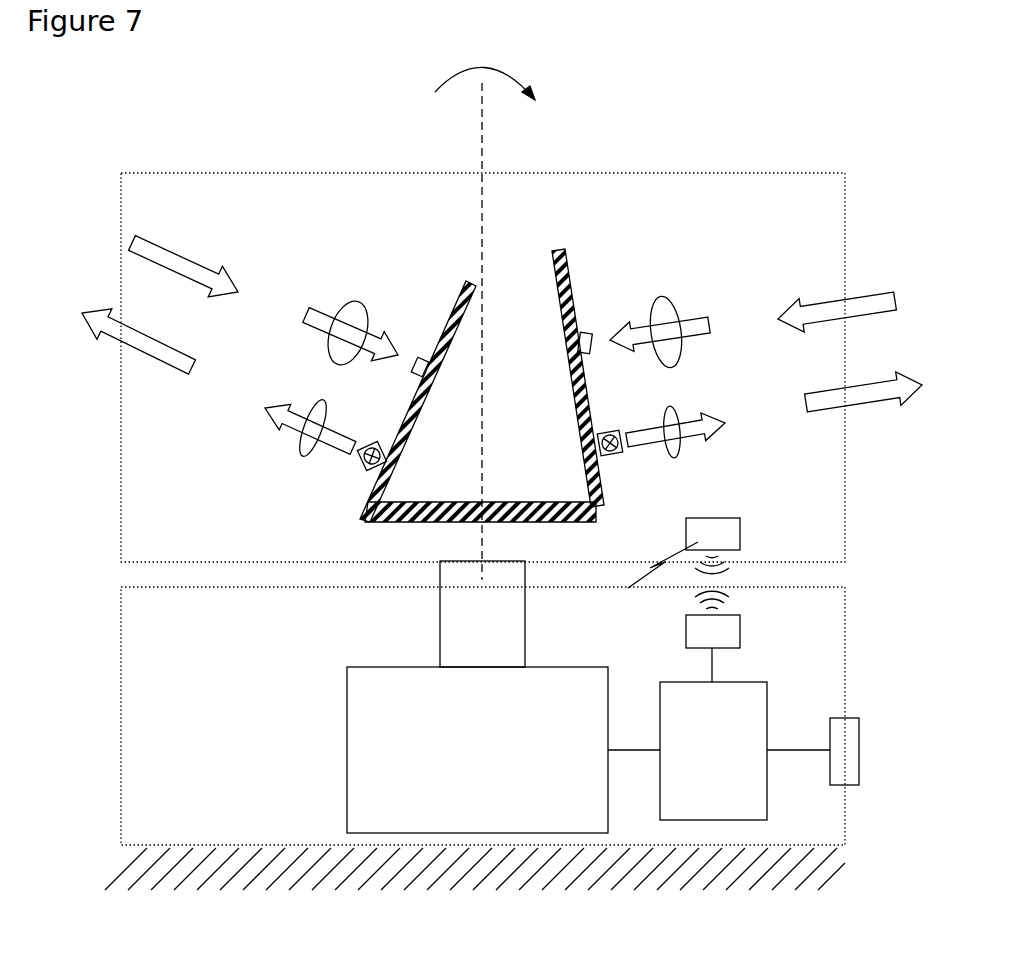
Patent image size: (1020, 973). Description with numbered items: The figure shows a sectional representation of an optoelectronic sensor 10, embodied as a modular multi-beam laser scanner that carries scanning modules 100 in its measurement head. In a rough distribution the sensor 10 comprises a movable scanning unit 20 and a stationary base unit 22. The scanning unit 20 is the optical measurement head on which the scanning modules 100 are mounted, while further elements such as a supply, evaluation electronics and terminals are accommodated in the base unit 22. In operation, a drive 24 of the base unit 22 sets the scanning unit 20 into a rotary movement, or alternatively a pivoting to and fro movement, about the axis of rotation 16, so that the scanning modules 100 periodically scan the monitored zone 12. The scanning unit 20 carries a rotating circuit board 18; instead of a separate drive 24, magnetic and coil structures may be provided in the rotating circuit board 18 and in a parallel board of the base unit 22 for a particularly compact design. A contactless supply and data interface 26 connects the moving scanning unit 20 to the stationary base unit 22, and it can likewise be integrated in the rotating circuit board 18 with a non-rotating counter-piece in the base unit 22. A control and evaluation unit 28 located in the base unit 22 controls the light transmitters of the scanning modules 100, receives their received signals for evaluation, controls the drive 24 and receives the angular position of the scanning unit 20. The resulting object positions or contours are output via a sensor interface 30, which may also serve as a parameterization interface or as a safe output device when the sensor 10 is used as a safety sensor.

The optoelectronic sensor 10 is at (731, 105).
The monitored zone 12 is at (917, 145).
The axis of rotation 16 is at (485, 113).
The rotating circuit board 18 is at (417, 518).
The scanning unit 20 is at (157, 175).
The base unit 22 is at (155, 772).
The drive 24 is at (336, 772).
The supply and data interface 26 is at (707, 633).
The control and evaluation unit 28 is at (725, 790).
The sensor interface 30 is at (848, 758).
The scanning modules 100 is at (283, 270).